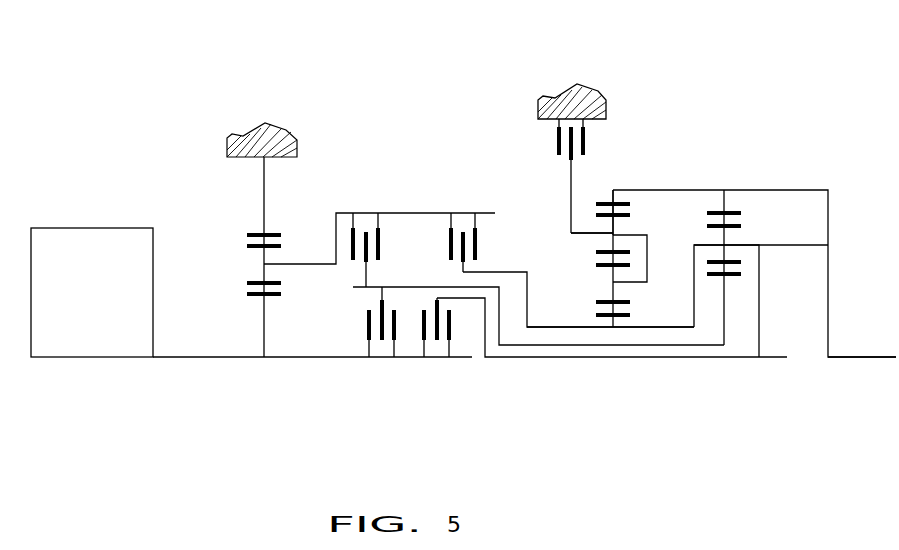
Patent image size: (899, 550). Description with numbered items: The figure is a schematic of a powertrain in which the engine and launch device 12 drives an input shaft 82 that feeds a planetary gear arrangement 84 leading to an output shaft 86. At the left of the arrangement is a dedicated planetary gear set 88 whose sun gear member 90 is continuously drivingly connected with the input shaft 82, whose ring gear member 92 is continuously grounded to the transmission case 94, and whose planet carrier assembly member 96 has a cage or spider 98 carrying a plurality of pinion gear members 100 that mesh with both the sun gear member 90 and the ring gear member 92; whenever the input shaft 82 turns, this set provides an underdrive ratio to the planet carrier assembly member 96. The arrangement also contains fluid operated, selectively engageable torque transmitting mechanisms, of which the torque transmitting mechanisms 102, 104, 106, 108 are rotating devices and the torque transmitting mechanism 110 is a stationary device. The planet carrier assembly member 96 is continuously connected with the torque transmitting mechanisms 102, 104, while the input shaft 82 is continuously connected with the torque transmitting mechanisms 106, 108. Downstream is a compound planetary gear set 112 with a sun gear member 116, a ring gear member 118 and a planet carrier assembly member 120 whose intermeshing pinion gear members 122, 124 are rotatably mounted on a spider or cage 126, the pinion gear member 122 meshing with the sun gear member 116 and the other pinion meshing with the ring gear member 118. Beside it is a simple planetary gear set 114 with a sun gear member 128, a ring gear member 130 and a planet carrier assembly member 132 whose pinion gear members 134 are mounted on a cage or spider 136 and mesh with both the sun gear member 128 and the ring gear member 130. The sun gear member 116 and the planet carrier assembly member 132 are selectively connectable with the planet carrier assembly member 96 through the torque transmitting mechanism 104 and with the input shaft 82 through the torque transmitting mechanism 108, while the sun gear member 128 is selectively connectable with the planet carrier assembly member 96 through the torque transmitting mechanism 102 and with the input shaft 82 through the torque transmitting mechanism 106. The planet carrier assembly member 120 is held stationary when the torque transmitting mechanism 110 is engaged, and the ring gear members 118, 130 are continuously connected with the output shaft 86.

The engine and launch device 12 is at (94, 225).
The input shaft 82 is at (165, 358).
The planetary gear arrangement 84 is at (513, 147).
The output shaft 86 is at (862, 358).
The dedicated planetary gear set 88 is at (214, 243).
The sun gear member 90 is at (266, 309).
The ring gear member 92 is at (266, 197).
The transmission case 94 is at (266, 119).
The planet carrier assembly member 96 is at (249, 263).
The cage or spider 98 is at (315, 263).
The pinion gear members 100 is at (247, 273).
The torque transmitting mechanism 102 is at (383, 209).
The torque transmitting mechanism 104 is at (466, 209).
The torque transmitting mechanism 106 is at (379, 361).
The torque transmitting mechanism 108 is at (437, 361).
The torque transmitting mechanism 110 is at (596, 139).
The compound planetary gear set 112 is at (612, 334).
The simple planetary gear set 114 is at (714, 291).
The sun gear member 116 is at (597, 321).
The ring gear member 118 is at (613, 192).
The planet carrier assembly member 120 is at (638, 206).
The pinion gear member 122 is at (613, 290).
The pinion gear member 124 is at (608, 223).
The spider or cage 126 is at (649, 257).
The sun gear member 128 is at (726, 305).
The ring gear member 130 is at (724, 200).
The planet carrier assembly member 132 is at (777, 216).
The pinion gear members 134 is at (726, 252).
The cage or spider 136 is at (747, 245).